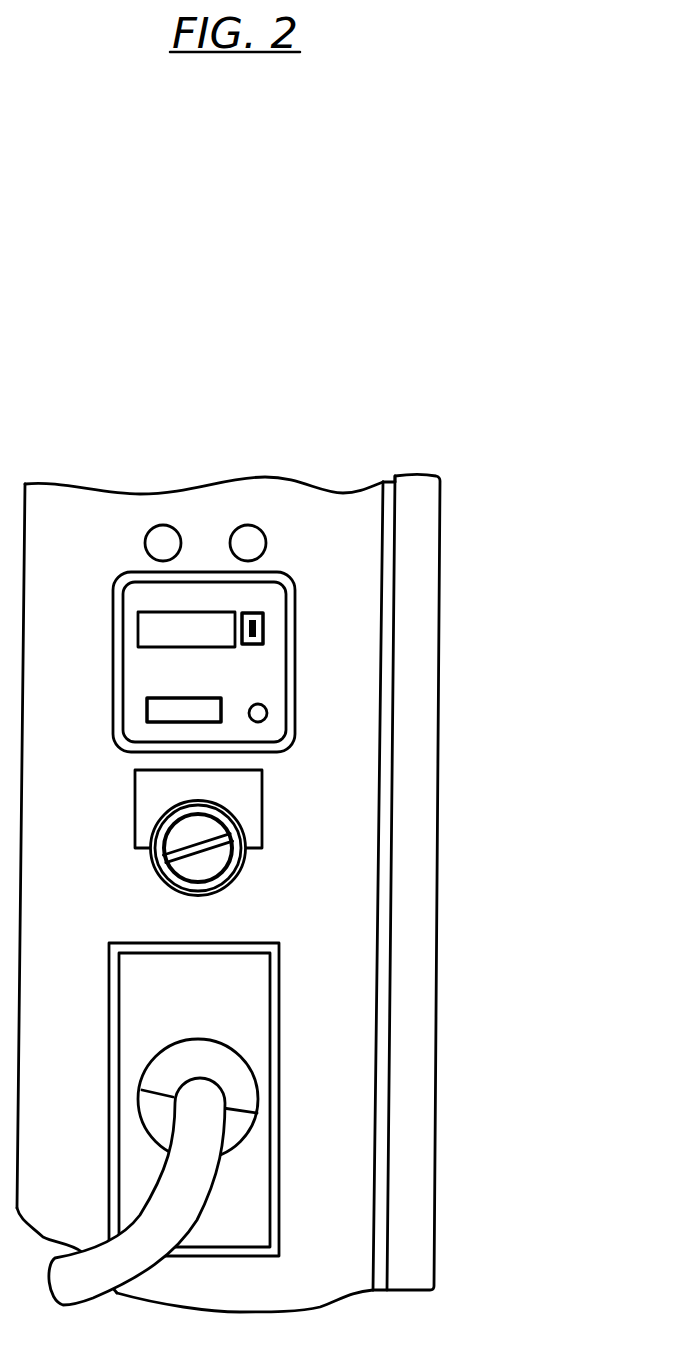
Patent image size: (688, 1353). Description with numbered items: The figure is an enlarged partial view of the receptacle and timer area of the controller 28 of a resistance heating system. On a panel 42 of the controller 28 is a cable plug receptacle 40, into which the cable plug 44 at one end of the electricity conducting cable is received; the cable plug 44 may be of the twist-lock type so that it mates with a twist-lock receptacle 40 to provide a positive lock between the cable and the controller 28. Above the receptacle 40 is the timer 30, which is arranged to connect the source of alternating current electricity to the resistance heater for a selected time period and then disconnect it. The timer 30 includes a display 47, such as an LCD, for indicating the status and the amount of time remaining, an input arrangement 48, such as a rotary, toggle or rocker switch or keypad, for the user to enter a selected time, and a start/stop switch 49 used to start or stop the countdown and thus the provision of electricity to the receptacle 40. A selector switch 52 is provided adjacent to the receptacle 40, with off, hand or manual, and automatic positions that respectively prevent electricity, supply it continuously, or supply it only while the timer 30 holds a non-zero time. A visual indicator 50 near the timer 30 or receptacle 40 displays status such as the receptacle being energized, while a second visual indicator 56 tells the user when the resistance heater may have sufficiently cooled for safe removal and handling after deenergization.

The controller 28 is at (439, 867).
The timer 30 is at (256, 628).
The cable plug receptacle 40 is at (227, 1043).
The panel 42 is at (332, 1245).
The cable plug 44 is at (233, 1088).
The display 47 is at (198, 623).
The input arrangement 48 is at (267, 711).
The start/stop switch 49 is at (208, 710).
The visual indicator 50 is at (249, 540).
The selector switch 52 is at (232, 840).
The visual indicator 56 is at (163, 540).